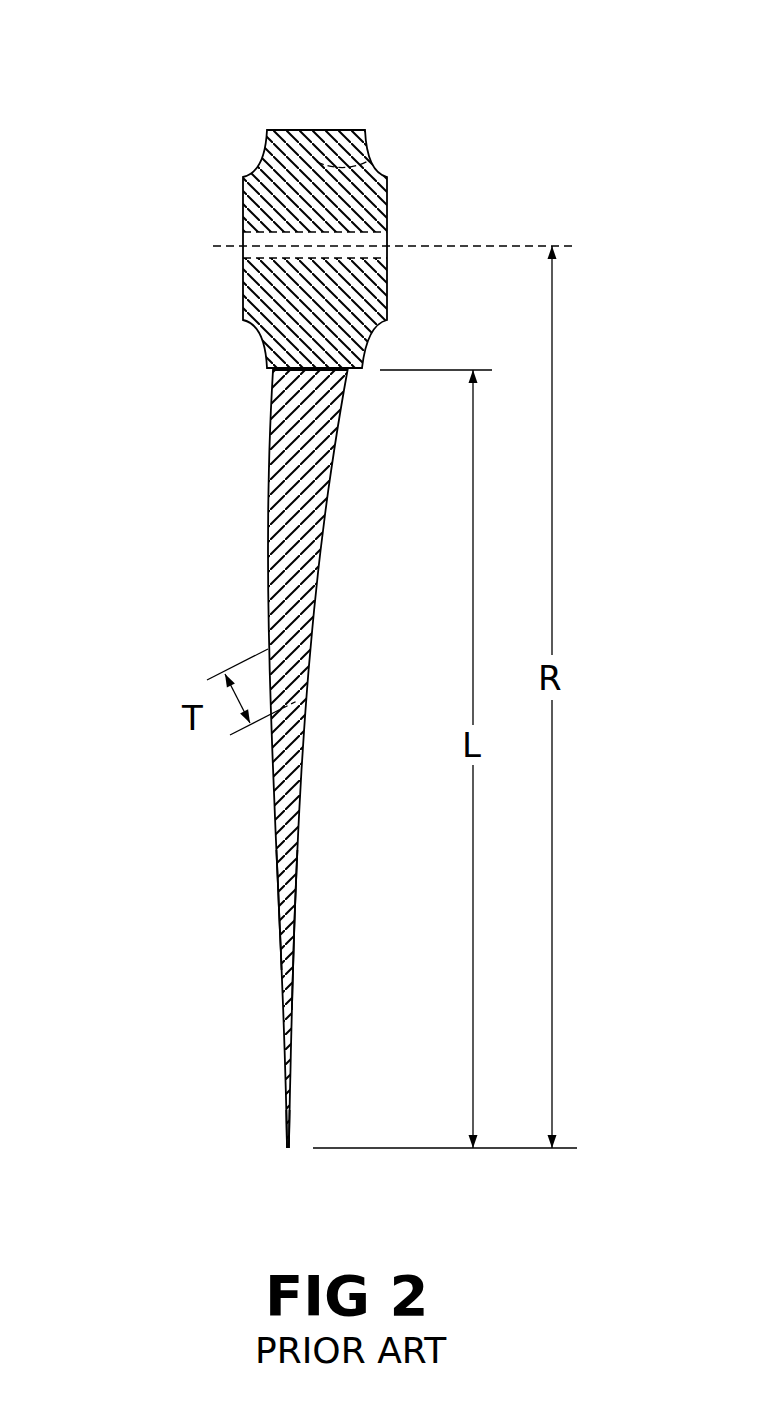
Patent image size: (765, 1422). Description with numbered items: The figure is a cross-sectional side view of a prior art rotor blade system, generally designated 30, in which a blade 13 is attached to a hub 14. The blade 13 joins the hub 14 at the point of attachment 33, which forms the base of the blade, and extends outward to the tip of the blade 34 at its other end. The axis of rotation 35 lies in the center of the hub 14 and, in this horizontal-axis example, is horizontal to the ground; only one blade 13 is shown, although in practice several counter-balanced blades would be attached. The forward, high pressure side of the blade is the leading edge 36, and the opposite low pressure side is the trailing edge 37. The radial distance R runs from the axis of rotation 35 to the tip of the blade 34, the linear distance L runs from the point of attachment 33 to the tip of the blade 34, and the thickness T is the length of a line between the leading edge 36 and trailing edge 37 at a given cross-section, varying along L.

The prior art rotor blade 30 is at (213, 62).
The hub 14 is at (368, 163).
The axis of rotation 35 is at (237, 243).
The point of attachment 33 is at (277, 373).
The blade 13 is at (302, 567).
The leading edge 36 is at (265, 913).
The trailing edge 37 is at (306, 970).
The tip of the blade 34 is at (285, 1148).